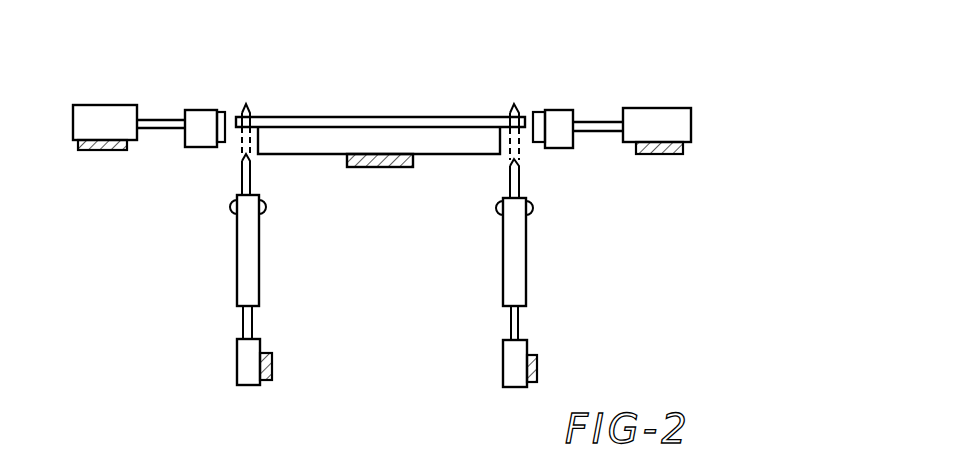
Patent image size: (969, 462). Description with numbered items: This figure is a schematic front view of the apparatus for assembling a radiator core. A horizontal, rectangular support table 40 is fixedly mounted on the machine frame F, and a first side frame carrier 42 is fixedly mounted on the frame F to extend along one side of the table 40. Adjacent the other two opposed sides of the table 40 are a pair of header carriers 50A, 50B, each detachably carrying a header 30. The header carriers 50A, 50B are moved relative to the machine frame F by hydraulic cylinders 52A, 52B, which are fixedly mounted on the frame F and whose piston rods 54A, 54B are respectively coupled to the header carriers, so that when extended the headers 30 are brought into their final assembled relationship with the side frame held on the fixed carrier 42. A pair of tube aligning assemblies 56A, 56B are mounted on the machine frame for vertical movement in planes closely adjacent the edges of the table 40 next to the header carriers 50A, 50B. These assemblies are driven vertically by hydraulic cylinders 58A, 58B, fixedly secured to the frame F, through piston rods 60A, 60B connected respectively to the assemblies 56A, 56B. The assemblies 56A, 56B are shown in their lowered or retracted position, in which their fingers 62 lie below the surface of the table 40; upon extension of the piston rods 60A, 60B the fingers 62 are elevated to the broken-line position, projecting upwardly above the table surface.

The header 30 is at (258, 82).
The support table 40 is at (432, 150).
The first side frame carrier 42 is at (410, 96).
The header carrier 50A is at (196, 116).
The header carrier 50B is at (560, 112).
The hydraulic cylinder 52A is at (140, 82).
The hydraulic cylinder 52B is at (716, 90).
The piston rod 54A is at (156, 135).
The piston rod 54B is at (595, 135).
The tube aligning assembly 56A is at (236, 245).
The tube aligning assembly 56B is at (502, 265).
The hydraulic cylinder 58A is at (243, 365).
The hydraulic cylinder 58B is at (503, 372).
The piston rod 60A is at (243, 323).
The piston rod 60B is at (511, 325).
The fingers 62 is at (253, 106).
The machine frame F is at (100, 148).